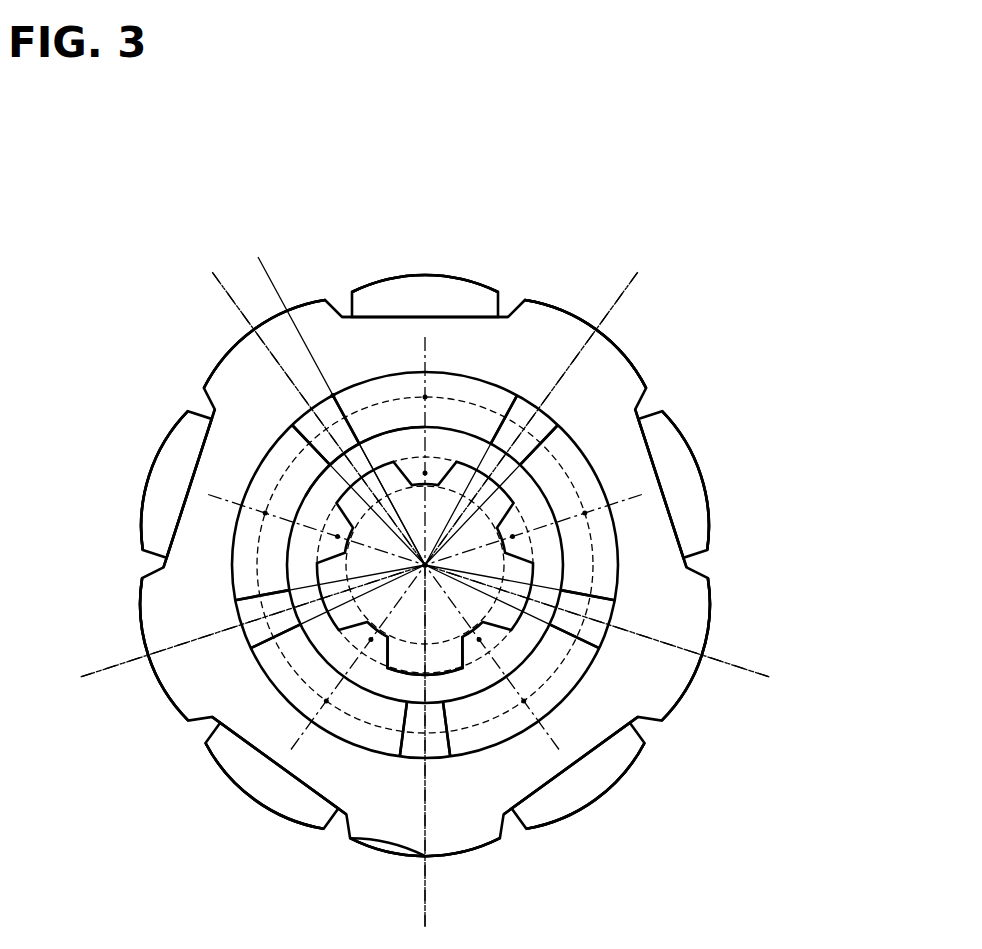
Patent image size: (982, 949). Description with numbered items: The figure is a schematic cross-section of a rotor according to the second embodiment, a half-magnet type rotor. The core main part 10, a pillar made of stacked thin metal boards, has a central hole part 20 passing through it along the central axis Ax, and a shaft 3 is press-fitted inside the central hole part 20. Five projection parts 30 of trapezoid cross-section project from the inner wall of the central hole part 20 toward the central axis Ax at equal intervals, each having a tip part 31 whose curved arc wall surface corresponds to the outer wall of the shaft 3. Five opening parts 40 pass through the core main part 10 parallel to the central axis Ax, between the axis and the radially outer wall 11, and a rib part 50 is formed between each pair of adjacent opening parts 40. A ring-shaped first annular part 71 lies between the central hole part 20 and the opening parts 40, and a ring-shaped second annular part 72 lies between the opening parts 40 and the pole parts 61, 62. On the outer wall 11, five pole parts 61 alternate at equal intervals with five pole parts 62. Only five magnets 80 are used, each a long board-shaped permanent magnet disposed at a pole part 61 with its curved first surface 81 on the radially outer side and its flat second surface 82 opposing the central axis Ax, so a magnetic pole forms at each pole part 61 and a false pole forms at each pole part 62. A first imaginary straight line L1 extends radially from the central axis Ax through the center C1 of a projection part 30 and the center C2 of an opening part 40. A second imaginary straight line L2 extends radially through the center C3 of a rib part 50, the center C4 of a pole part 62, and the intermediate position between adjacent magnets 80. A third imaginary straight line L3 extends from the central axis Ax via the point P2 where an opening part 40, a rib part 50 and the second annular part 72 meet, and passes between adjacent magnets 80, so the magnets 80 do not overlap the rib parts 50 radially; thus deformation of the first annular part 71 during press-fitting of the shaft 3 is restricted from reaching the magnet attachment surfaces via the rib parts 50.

The shaft 3 is at (543, 497).
The core main part 10 is at (492, 336).
The outer wall 11 is at (550, 312).
The central hole part 20 is at (458, 465).
The projection part 30 is at (447, 450).
The tip part 31 is at (363, 440).
The opening part 40 is at (372, 400).
The rib part 50 is at (506, 382).
The pole part 61 is at (427, 276).
The pole part 62 is at (610, 344).
The first annular part 71 is at (408, 672).
The second annular part 72 is at (388, 772).
The magnet 80 is at (392, 289).
The first surface 81 is at (463, 283).
The second surface 82 is at (456, 318).
The central axis Ax is at (425, 565).
The center of the projection part C1 is at (425, 472).
The center of the opening part C2 is at (425, 396).
The center of the rib part C3 is at (535, 432).
The center of the pole part C4 is at (596, 330).
The first imaginary straight line L1 is at (424, 345).
The second imaginary straight line L2 is at (630, 268).
The third imaginary straight line L3 is at (266, 262).
The point P2 is at (333, 394).